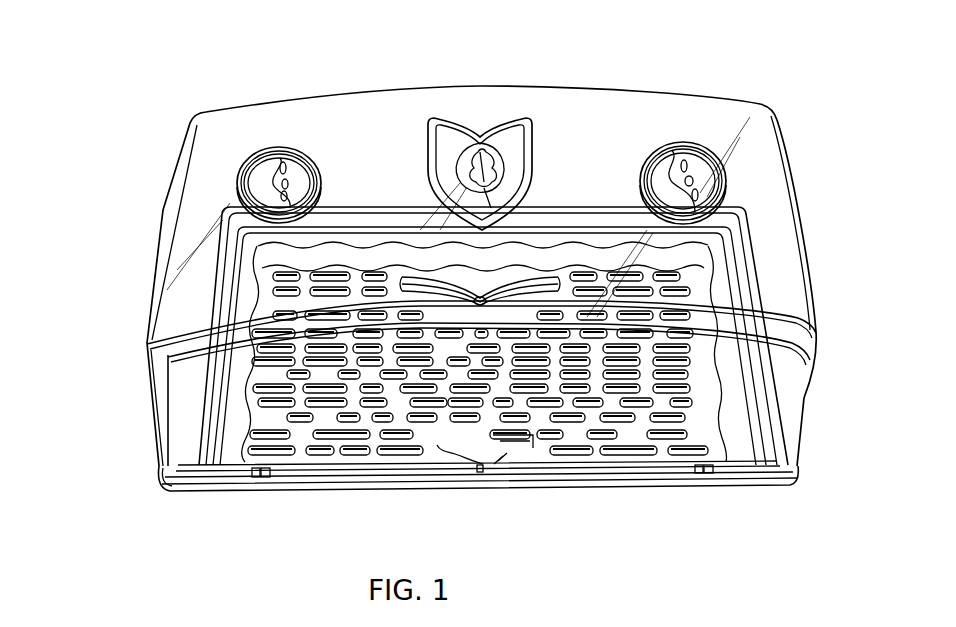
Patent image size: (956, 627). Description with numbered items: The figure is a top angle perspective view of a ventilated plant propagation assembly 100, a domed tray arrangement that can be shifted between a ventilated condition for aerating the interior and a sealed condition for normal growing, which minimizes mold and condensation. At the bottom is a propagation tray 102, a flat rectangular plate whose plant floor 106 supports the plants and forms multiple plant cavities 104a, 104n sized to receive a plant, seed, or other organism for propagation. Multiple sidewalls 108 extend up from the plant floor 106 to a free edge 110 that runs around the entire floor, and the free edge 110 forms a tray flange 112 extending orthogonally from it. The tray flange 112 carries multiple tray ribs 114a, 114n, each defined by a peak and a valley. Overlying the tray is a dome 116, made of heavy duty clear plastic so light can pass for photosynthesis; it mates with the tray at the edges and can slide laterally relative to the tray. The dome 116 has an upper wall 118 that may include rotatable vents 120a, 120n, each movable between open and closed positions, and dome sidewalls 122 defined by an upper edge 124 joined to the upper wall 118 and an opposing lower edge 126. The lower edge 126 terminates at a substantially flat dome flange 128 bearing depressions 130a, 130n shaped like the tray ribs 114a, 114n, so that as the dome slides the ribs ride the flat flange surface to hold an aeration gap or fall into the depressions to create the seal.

The ventilated plant propagation assembly 100 is at (246, 74).
The propagation tray 102 is at (427, 461).
The plant cavity 104a is at (350, 456).
The plant cavity 104n is at (553, 440).
The plant floor 106 is at (712, 384).
The sidewalls 108 is at (755, 412).
The free edge 110 is at (165, 492).
The tray flange 112 is at (218, 493).
The tray rib 114a is at (275, 475).
The tray rib 114n is at (720, 468).
The dome 116 is at (513, 92).
The upper wall 118 is at (387, 188).
The vent 120a is at (296, 166).
The vent 120n is at (703, 152).
The dome sidewalls 122 is at (163, 354).
The upper edge 124 is at (138, 342).
The lower edge 126 is at (152, 398).
The dome flange 128 is at (155, 473).
The depression 130a is at (260, 478).
The depression 130n is at (697, 471).